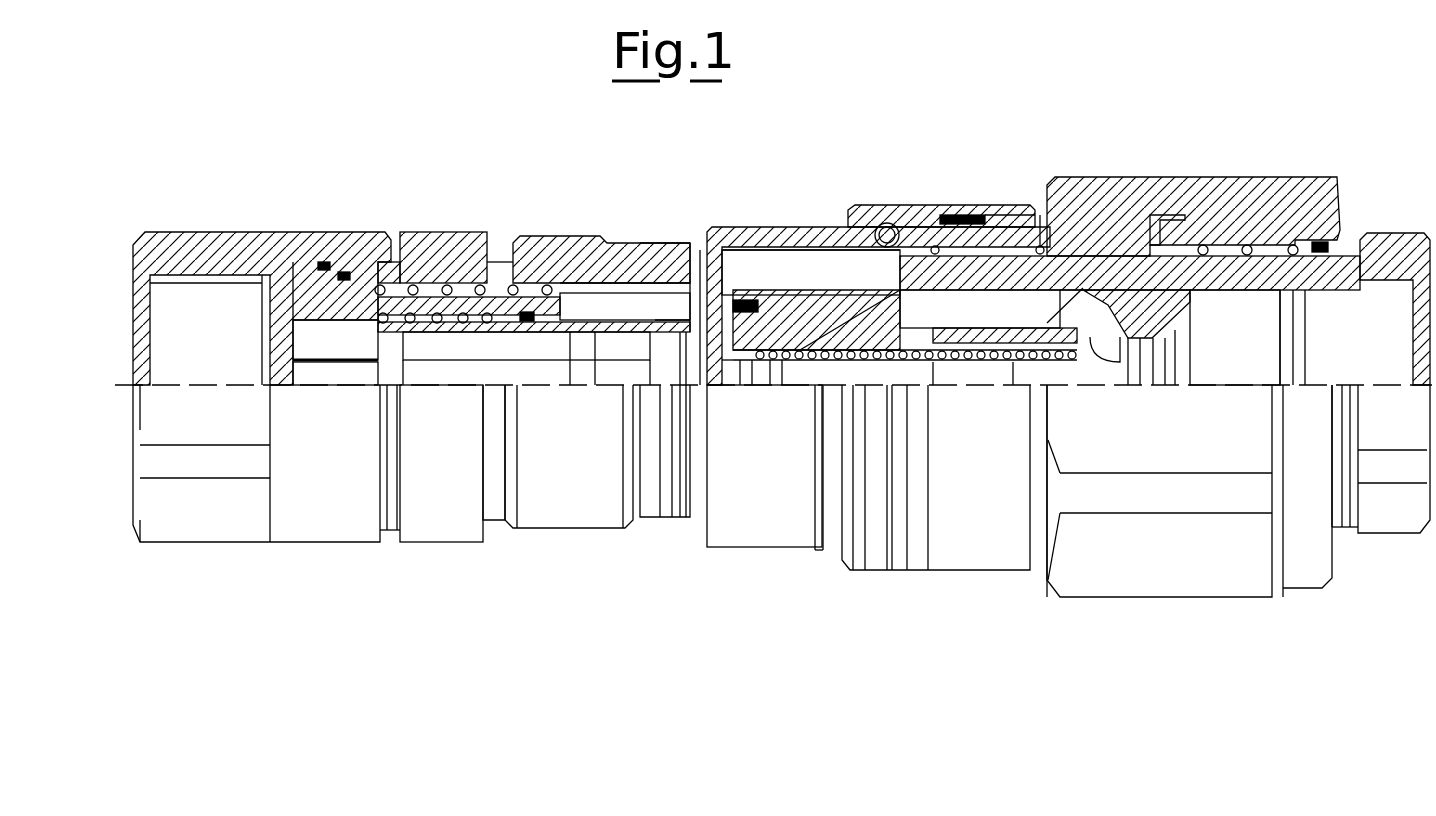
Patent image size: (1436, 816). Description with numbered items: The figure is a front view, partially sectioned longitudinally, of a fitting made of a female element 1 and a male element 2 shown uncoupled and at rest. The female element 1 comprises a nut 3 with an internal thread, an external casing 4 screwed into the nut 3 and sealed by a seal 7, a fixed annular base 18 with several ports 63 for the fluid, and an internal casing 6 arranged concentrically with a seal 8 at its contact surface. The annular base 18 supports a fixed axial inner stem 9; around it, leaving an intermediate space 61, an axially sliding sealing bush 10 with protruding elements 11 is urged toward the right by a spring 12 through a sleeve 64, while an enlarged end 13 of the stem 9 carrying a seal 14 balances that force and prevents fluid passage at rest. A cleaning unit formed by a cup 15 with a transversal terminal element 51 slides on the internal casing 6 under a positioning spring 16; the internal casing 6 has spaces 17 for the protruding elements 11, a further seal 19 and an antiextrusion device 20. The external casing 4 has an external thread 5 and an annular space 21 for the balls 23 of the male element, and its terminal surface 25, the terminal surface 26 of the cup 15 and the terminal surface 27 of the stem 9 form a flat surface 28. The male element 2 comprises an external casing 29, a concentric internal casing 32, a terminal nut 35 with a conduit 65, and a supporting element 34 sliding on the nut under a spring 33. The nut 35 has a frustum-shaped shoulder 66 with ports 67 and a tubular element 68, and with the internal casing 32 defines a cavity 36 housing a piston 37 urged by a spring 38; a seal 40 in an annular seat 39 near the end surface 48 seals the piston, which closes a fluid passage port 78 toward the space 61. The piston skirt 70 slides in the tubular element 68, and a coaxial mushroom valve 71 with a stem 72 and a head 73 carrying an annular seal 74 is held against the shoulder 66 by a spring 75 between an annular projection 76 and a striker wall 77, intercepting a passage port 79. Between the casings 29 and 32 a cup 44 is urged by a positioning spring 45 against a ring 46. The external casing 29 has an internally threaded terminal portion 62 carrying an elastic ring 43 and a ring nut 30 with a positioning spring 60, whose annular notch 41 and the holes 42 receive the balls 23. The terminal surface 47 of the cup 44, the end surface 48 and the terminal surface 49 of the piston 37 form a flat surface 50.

The female element 1 is at (340, 542).
The male element 2 is at (1180, 603).
The nut 3 is at (238, 245).
The external casing 4 is at (452, 240).
The external thread 5 is at (620, 245).
The internal casing 6 is at (422, 245).
The seal 7 is at (322, 258).
The seal 8 is at (346, 270).
The axial inner stem 9 is at (490, 360).
The sealing bush 10 is at (572, 325).
The protruding elements 11 is at (598, 338).
The spring 12 is at (385, 352).
The enlarged end 13 is at (652, 345).
The seal 14 is at (640, 335).
The cup 15 is at (603, 280).
The positioning spring 16 is at (486, 262).
The spaces 17 is at (585, 335).
The annular base 18 is at (330, 306).
The seal 19 is at (517, 310).
The antiextrusion device 20 is at (533, 308).
The annular space 21 is at (668, 312).
The balls 23 is at (878, 228).
The terminal surface 25 is at (712, 290).
The terminal surface 26 is at (660, 300).
The terminal surface 27 is at (668, 335).
The flat surface 28 is at (686, 340).
The external casing 29 is at (1000, 222).
The ring nut 30 is at (916, 210).
The internal casing 32 is at (1062, 268).
The spring 33 is at (1268, 240).
The supporting element 34 is at (1240, 225).
The terminal nut 35 is at (1390, 238).
The cavity 36 is at (952, 319).
The piston 37 is at (778, 372).
The spring 38 is at (815, 385).
The annular seat 39 is at (805, 318).
The seal 40 is at (770, 320).
The annular notch 41 is at (898, 215).
The holes 42 is at (843, 238).
The elastic ring 43 is at (812, 238).
The cup 44 is at (808, 250).
The positioning spring 45 is at (1043, 245).
The ring 46 is at (1160, 215).
The terminal surface 47 is at (740, 295).
The end surface 48 is at (742, 362).
The terminal surface 49 is at (756, 362).
The flat surface 50 is at (724, 372).
The transversal terminal element 51 is at (636, 292).
The positioning spring 60 is at (955, 210).
The intermediate space 61 is at (537, 350).
The terminal portion 62 is at (775, 232).
The ports 63 is at (335, 340).
The sleeve 64 is at (470, 340).
The conduit 65 is at (1343, 349).
The frustum-shaped shoulder 66 is at (1195, 295).
The ports 67 is at (1115, 268).
The tubular element 68 is at (985, 335).
The skirt 70 is at (930, 360).
The mushroom valve 71 is at (1197, 353).
The stem 72 is at (1003, 380).
The head 73 is at (1178, 365).
The annular seal 74 is at (1140, 315).
The spring 75 is at (1016, 380).
The annular projection 76 is at (945, 360).
The striker wall 77 is at (1085, 365).
The fluid passage port 78 is at (870, 318).
The passage port 79 is at (1160, 325).